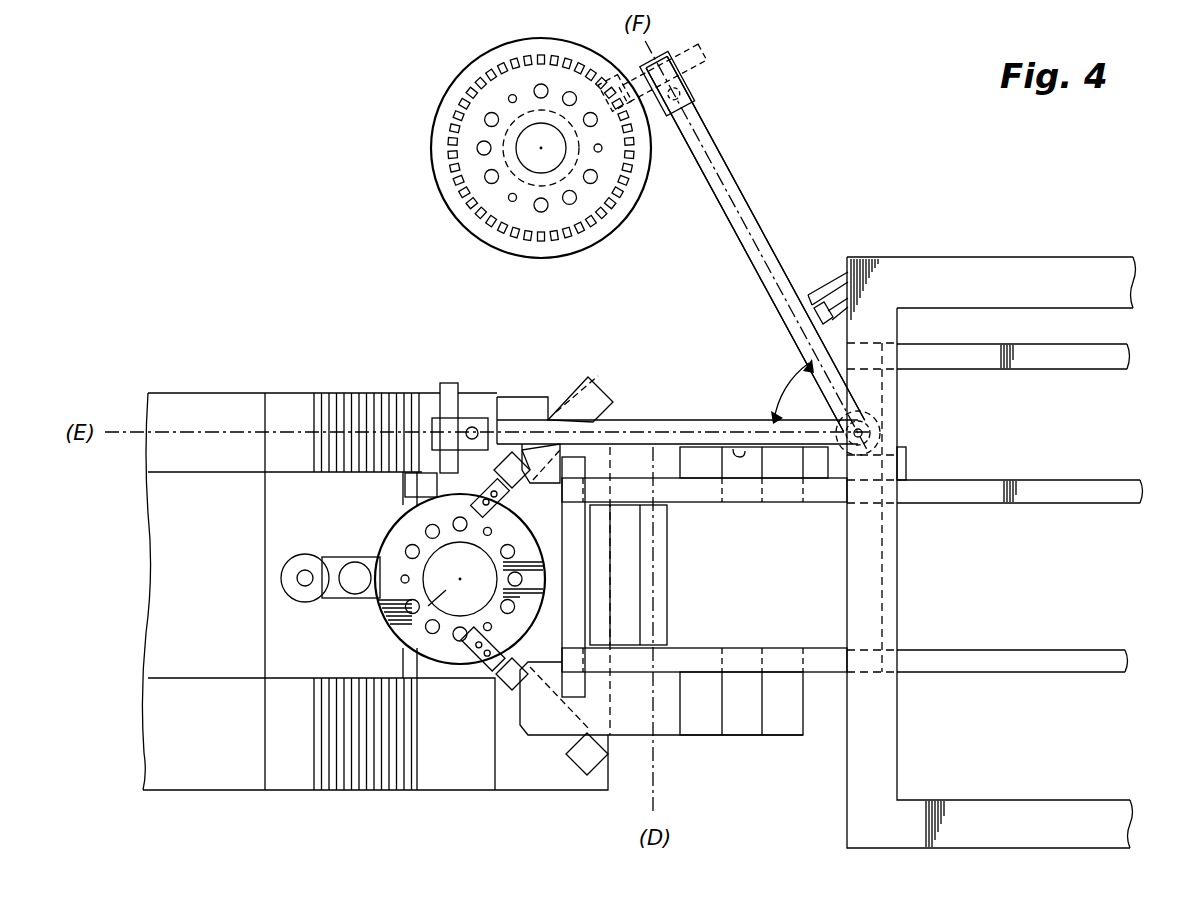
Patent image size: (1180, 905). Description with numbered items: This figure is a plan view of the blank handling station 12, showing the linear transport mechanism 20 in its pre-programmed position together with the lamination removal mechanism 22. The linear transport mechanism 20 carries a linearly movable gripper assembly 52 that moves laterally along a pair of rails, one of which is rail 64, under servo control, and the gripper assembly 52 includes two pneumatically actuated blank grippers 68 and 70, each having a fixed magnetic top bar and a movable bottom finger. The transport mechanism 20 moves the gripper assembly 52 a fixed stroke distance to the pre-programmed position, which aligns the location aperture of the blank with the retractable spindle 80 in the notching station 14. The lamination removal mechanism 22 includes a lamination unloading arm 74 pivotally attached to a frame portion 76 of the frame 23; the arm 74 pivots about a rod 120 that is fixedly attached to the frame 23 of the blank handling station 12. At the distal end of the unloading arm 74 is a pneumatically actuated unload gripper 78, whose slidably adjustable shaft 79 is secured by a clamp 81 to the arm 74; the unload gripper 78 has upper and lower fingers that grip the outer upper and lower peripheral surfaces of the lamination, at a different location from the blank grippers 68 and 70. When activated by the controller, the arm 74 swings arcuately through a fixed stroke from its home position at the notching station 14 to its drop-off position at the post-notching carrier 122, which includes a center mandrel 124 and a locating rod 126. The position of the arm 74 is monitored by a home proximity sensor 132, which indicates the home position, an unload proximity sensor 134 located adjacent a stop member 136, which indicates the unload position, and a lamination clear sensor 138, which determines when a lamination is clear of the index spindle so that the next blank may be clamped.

The blank handling station 12 is at (1068, 192).
The notching station 14 is at (222, 383).
The linear transport mechanism 20 is at (1080, 462).
The lamination removal mechanism 22 is at (802, 243).
The frame 23 is at (1097, 270).
The gripper assembly 52 is at (750, 748).
The rail 64 is at (626, 738).
The blank gripper 68 is at (566, 392).
The blank gripper 70 is at (507, 688).
The lamination unloading arm 74 is at (505, 419).
The frame portion 76 is at (880, 424).
The unload gripper 78 is at (420, 485).
The slidably adjustable shaft 79 is at (449, 383).
The retractable spindle 80 is at (428, 606).
The clamp 81 is at (437, 418).
The rod 120 is at (885, 437).
The post-notching carrier 122 is at (434, 120).
The center mandrel 124 is at (514, 156).
The locating rod 126 is at (573, 204).
The home proximity sensor 132 is at (740, 456).
The unload proximity sensor 134 is at (816, 316).
The stop member 136 is at (834, 276).
The lamination clear sensor 138 is at (783, 388).